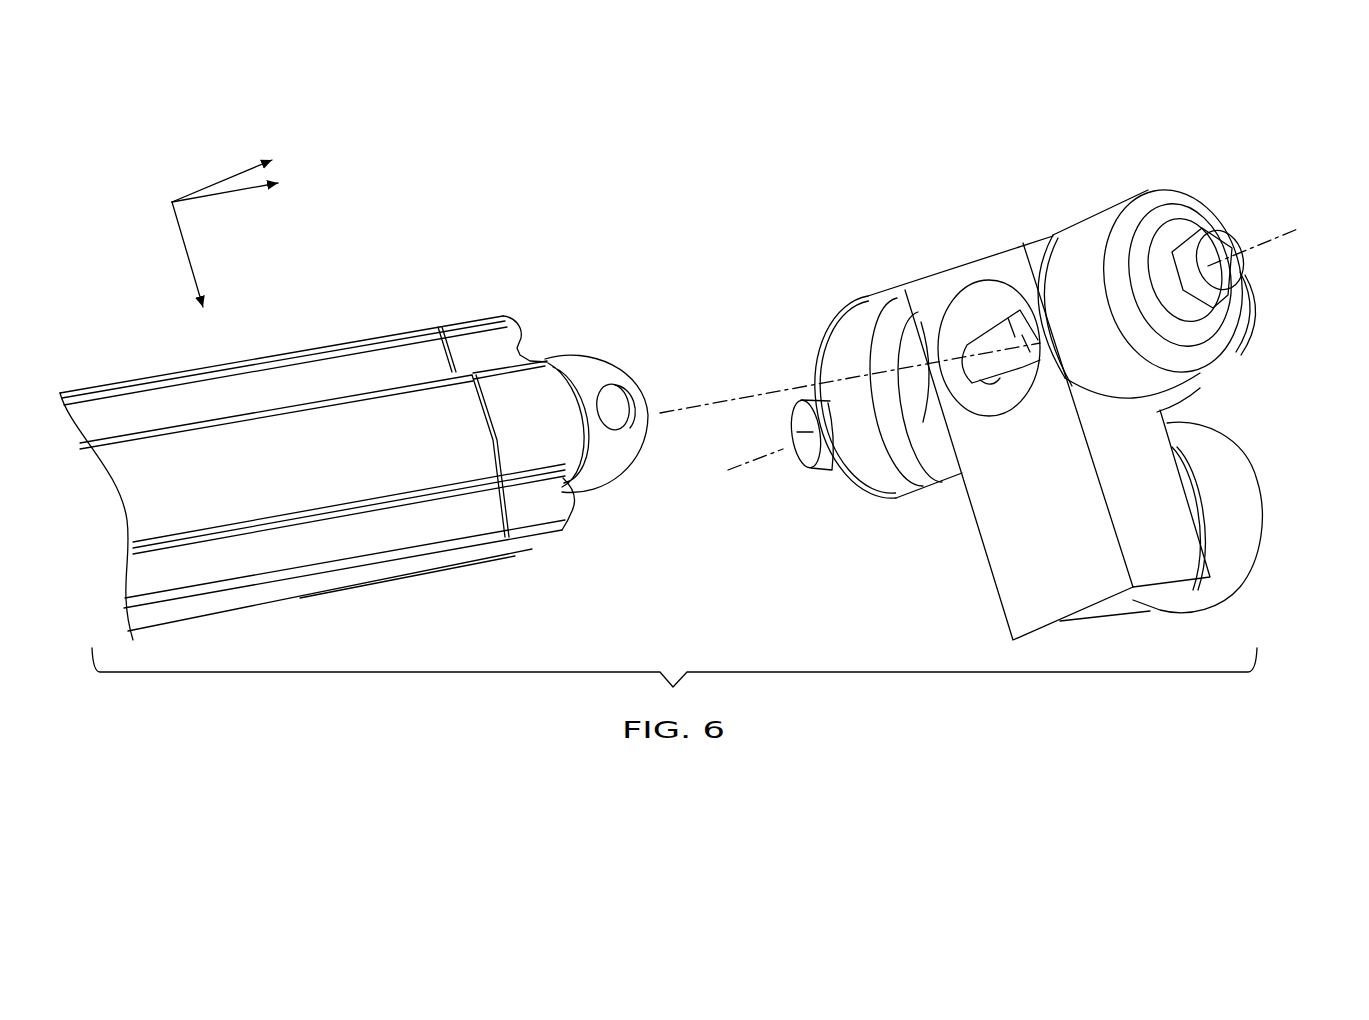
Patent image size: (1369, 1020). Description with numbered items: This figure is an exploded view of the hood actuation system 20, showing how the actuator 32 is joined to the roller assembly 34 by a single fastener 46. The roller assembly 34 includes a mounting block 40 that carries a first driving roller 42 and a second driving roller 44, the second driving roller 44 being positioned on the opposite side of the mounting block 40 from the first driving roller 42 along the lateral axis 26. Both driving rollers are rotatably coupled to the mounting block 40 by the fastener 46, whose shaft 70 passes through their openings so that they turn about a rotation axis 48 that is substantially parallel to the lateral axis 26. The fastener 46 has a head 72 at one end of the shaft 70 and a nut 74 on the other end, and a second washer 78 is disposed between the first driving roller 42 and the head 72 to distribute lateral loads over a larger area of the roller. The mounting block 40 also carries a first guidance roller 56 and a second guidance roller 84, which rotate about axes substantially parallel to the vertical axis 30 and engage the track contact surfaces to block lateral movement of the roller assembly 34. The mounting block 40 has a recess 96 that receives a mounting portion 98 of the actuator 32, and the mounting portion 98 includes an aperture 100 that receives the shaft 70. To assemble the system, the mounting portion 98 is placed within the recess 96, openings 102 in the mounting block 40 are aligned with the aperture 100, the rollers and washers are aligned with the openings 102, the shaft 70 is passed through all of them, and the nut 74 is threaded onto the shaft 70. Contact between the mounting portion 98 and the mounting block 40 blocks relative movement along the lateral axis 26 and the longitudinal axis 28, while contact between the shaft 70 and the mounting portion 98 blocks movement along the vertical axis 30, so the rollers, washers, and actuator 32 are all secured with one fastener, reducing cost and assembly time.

The hood actuation system 20 is at (692, 250).
The lateral axis 26 is at (215, 184).
The longitudinal axis 28 is at (186, 247).
The vertical axis 30 is at (218, 195).
The actuator 32 is at (247, 362).
The roller assembly 34 is at (995, 218).
The mounting block 40 is at (980, 530).
The first driving roller 42 is at (1185, 196).
The second driving roller 44 is at (877, 302).
The fastener 46 is at (1258, 262).
The rotation axis 48 is at (1253, 250).
The first guidance roller 56 is at (1198, 392).
The shaft 70 is at (797, 420).
The head 72 is at (1205, 244).
The nut 74 is at (833, 470).
The second washer 78 is at (1213, 315).
The second guidance roller 84 is at (1232, 570).
The recess 96 is at (965, 313).
The mounting portion 98 is at (565, 357).
The aperture 100 is at (636, 406).
The openings 102 is at (985, 380).